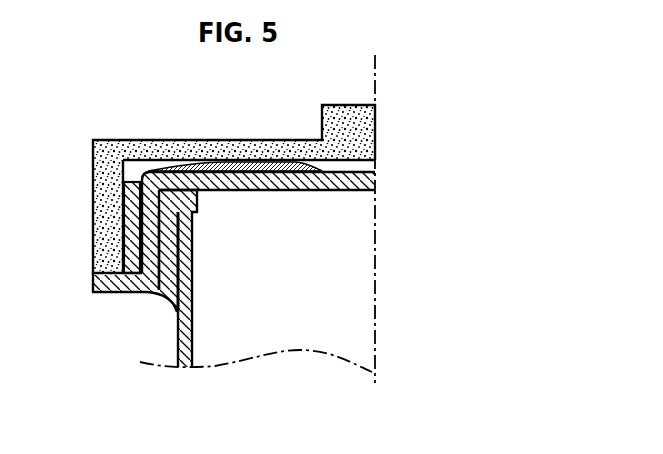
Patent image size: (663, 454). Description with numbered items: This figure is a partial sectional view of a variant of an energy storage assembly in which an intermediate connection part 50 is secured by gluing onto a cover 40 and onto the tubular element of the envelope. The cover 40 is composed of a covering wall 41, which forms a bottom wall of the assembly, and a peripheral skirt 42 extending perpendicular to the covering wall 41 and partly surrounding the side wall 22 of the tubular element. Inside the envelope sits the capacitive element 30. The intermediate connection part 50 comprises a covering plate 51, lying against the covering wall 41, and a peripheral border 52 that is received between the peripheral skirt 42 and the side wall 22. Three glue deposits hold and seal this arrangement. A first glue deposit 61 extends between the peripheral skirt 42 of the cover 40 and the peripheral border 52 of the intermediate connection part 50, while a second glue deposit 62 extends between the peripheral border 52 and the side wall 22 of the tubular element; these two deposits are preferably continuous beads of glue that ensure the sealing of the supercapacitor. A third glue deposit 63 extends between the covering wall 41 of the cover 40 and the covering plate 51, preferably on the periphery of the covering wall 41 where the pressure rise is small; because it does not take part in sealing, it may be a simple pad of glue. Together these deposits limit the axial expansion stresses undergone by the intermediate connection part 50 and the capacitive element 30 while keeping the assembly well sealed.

The side wall 22 is at (182, 331).
The capacitive element 30 is at (290, 303).
The cover 40 is at (204, 119).
The covering wall 41 is at (242, 159).
The peripheral skirt 42 is at (107, 233).
The intermediate connection part 50 is at (363, 181).
The covering plate 51 is at (293, 193).
The peripheral border 52 is at (150, 233).
The first glue deposit 61 is at (131, 209).
The second glue deposit 62 is at (172, 262).
The third glue deposit 63 is at (272, 168).